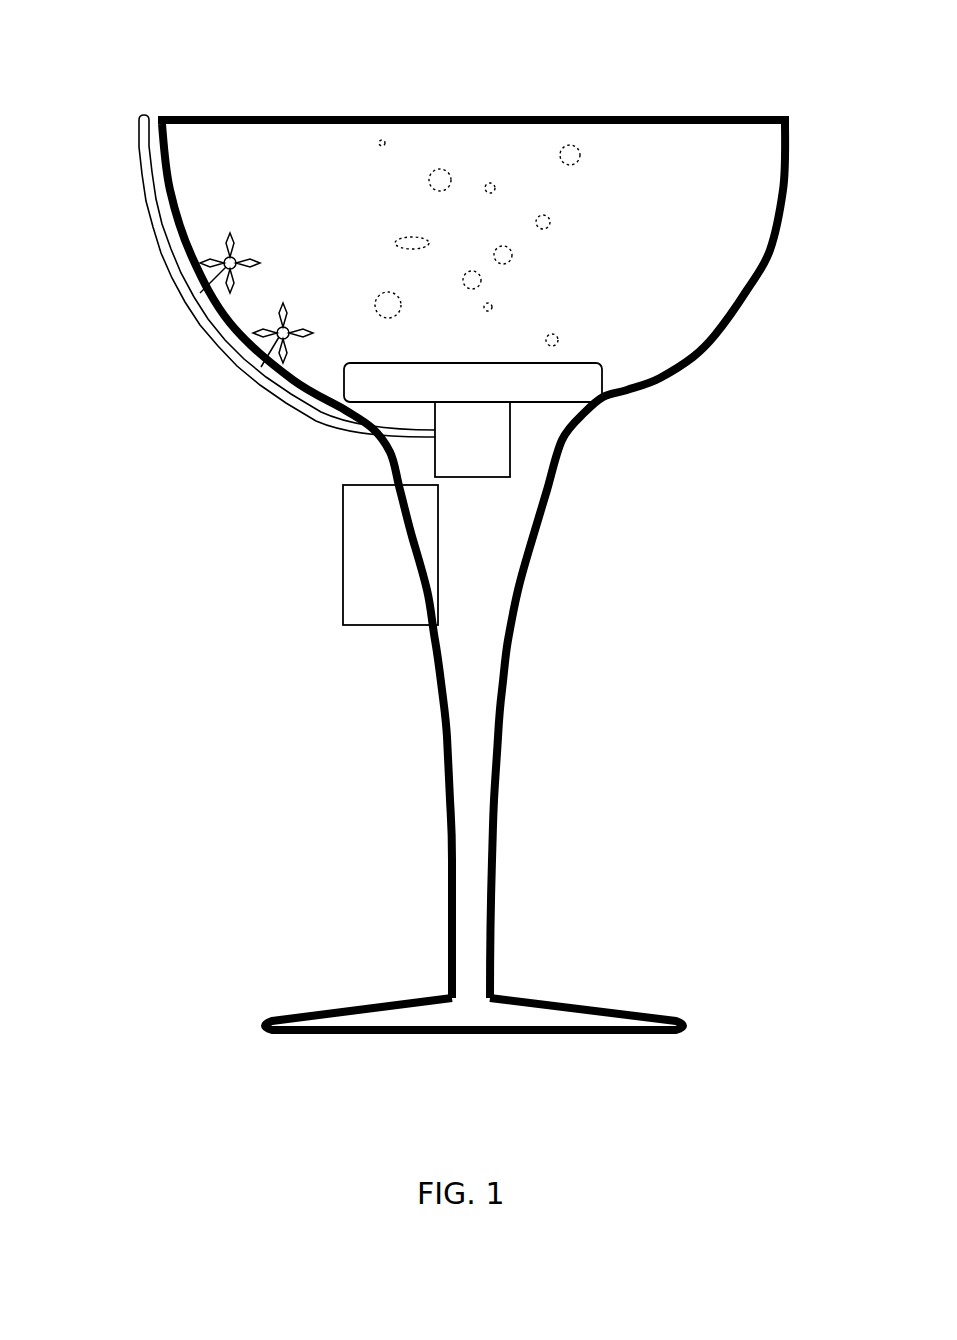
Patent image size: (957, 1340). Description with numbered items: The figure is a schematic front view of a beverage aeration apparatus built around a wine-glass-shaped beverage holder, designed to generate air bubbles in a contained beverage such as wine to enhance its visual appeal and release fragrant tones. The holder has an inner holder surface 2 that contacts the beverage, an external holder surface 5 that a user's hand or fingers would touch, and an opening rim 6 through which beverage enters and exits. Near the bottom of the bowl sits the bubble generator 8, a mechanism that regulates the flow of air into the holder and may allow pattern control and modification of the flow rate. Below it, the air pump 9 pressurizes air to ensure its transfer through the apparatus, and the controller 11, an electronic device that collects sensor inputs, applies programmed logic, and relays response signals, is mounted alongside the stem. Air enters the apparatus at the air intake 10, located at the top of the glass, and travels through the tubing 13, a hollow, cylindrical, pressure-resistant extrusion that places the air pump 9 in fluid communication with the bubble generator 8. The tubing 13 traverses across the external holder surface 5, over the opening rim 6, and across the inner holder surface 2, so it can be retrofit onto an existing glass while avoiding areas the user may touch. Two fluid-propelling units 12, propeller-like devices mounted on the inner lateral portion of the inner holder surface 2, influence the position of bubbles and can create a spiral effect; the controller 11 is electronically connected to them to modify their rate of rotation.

The inner holder surface 2 is at (687, 262).
The external holder surface 5 is at (786, 331).
The opening rim 6 is at (532, 112).
The bubble generator 8 is at (570, 393).
The air pump 9 is at (481, 454).
The air intake 10 is at (461, 516).
The controller 11 is at (396, 572).
The fluid-propelling unit 12 is at (178, 292).
The tubing 13 is at (313, 421).